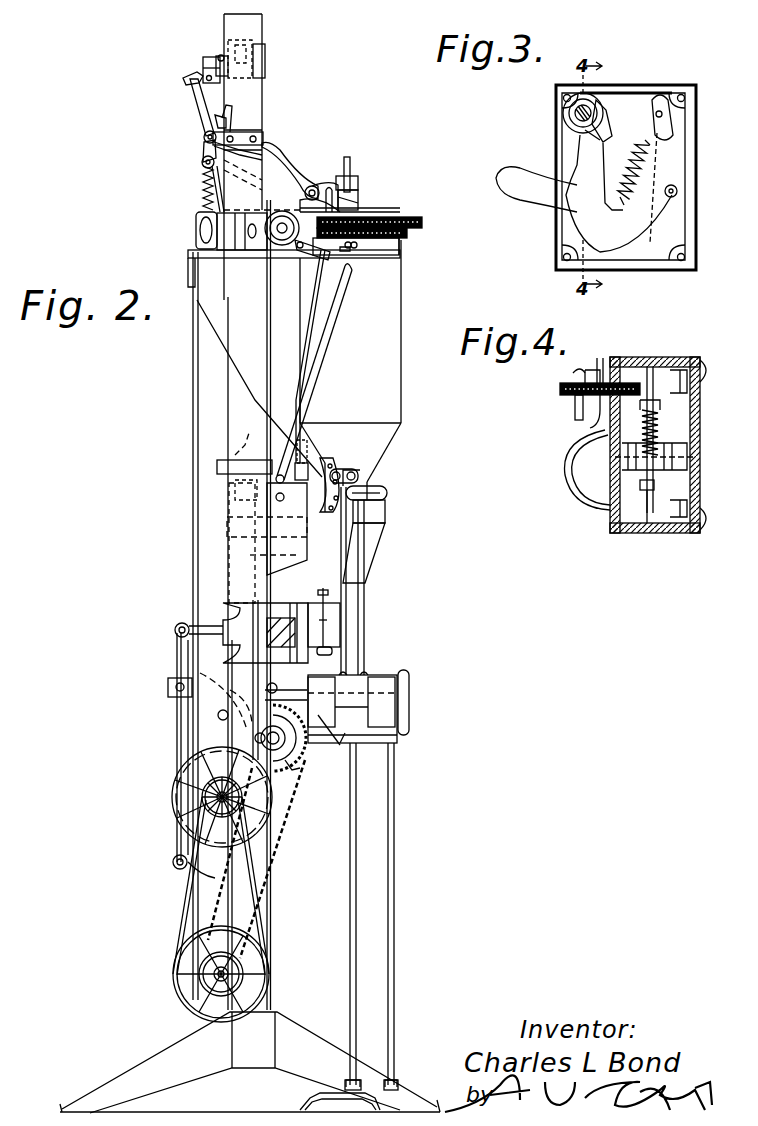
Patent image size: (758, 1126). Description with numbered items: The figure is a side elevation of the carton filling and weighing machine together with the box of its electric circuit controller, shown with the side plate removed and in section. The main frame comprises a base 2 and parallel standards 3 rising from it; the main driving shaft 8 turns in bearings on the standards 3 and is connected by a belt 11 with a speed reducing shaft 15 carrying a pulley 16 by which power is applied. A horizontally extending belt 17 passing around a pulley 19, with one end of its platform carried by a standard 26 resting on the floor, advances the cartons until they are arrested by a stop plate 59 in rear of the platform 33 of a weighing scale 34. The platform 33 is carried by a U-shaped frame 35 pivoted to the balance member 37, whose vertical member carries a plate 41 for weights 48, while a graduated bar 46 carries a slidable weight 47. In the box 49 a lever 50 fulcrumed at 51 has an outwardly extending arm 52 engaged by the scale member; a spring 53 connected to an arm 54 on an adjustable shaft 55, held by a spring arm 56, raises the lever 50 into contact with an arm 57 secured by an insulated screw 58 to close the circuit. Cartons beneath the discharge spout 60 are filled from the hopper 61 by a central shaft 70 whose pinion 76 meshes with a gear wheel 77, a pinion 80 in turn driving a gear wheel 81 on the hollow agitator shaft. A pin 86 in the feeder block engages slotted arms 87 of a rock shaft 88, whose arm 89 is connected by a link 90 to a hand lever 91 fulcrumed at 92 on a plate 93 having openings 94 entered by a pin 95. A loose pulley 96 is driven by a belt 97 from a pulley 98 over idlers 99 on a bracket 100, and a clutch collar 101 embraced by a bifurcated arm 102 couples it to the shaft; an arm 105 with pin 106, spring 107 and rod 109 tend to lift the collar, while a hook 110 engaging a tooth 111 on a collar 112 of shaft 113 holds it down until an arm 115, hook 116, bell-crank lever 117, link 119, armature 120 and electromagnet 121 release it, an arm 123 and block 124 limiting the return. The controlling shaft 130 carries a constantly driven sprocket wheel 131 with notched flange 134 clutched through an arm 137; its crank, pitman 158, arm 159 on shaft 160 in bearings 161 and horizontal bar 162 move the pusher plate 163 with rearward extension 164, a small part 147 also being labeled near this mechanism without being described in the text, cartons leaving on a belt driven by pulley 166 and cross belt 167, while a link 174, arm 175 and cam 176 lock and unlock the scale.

In FIG. 2, the base 2 is at (160, 1068).
In FIG. 2, the standards 3 is at (270, 893).
In FIG. 2, the main driving shaft 8 is at (270, 975).
In FIG. 2, the belt 11 is at (180, 918).
In FIG. 2, the speed reducing shaft 15 is at (207, 806).
In FIG. 2, the pulley 16 is at (174, 795).
In FIG. 2, the horizontally extending belt 17 is at (345, 733).
In FIG. 2, the pulley 19 is at (340, 720).
In FIG. 2, the standard 26 is at (395, 893).
In FIG. 2, the platform 33 is at (364, 675).
In FIG. 2, the weighing scale 34 is at (227, 527).
In FIG. 2, the U-shaped frame 35 is at (375, 560).
In FIG. 2, the balance member 37 is at (240, 485).
In FIG. 2, the platform or plate 41 is at (217, 466).
In FIG. 2, the side plate or bar 46 is at (352, 470).
In FIG. 2, the slidable weight 47 is at (302, 462).
In FIG. 2, the weights 48 is at (235, 455).
In FIG. 3, the box 49 is at (558, 121).
In FIG. 4, the box 49 is at (612, 530).
In FIG. 3, the lever 50 is at (632, 252).
In FIG. 4, the lever 50 is at (650, 533).
In FIG. 3, the fulcrum 51 is at (670, 200).
In FIG. 3, the outwardly extending arm 52 is at (528, 190).
In FIG. 3, the spring 53 is at (625, 165).
In FIG. 4, the spring 53 is at (620, 430).
In FIG. 3, the arm 54 is at (652, 105).
In FIG. 4, the arm 54 is at (657, 368).
In FIG. 3, the shaft 55 is at (661, 95).
In FIG. 4, the spring arm 56 is at (568, 478).
In FIG. 3, the arm 57 is at (600, 132).
In FIG. 4, the arm 57 is at (596, 425).
In FIG. 3, the screw 58 is at (570, 112).
In FIG. 4, the screw 58 is at (565, 398).
In FIG. 2, the stop plate 59 is at (330, 600).
In FIG. 2, the discharge spout 60 is at (375, 545).
In FIG. 2, the hopper 61 is at (385, 378).
In FIG. 2, the central shaft 70 is at (352, 160).
In FIG. 2, the pinion 76 is at (350, 252).
In FIG. 2, the gear wheel 77 is at (423, 223).
In FIG. 2, the pinion 80 is at (408, 233).
In FIG. 2, the gear wheel 81 is at (360, 257).
In FIG. 2, the pin 86 is at (365, 245).
In FIG. 2, the arms 87 is at (400, 250).
In FIG. 2, the rock shaft 88 is at (306, 252).
In FIG. 2, the arm 89 is at (316, 275).
In FIG. 2, the link or bar 90 is at (318, 362).
In FIG. 2, the hand lever 91 is at (378, 486).
In FIG. 2, the fulcrum 92 is at (265, 495).
In FIG. 2, the plate 93 is at (330, 468).
In FIG. 2, the openings 94 is at (387, 515).
In FIG. 2, the pin 95 is at (387, 492).
In FIG. 2, the pulley 96 is at (385, 212).
In FIG. 2, the belt 97 is at (192, 361).
In FIG. 2, the pulley 98 is at (195, 975).
In FIG. 2, the idlers 99 is at (196, 228).
In FIG. 2, the bracket 100 is at (235, 250).
In FIG. 2, the clutch collar 101 is at (360, 198).
In FIG. 2, the bifurcated arm 102 is at (345, 182).
In FIG. 2, the arm 105 is at (315, 178).
In FIG. 2, the pin 106 is at (202, 163).
In FIG. 2, the spring 107 is at (203, 185).
In FIG. 2, the rod 109 is at (208, 205).
In FIG. 2, the hook 110 is at (203, 145).
In FIG. 2, the tooth 111 is at (205, 143).
In FIG. 2, the collar 112 is at (205, 135).
In FIG. 2, the shaft 113 is at (262, 148).
In FIG. 2, the arm 115 is at (192, 100).
In FIG. 2, the hook 116 is at (186, 76).
In FIG. 2, the bell-crank lever 117 is at (203, 64).
In FIG. 2, the link 119 is at (218, 56).
In FIG. 2, the armature 120 is at (215, 62).
In FIG. 2, the electromagnet 121 is at (262, 58).
In FIG. 2, the arm 123 is at (225, 120).
In FIG. 2, the block 124 is at (225, 122).
In FIG. 2, the controlling shaft 130 is at (245, 740).
In FIG. 2, the sprocket wheel 131 is at (300, 760).
In FIG. 2, the annular flange 134 is at (298, 775).
In FIG. 2, the arm 137 is at (256, 740).
In FIG. 2, the stop 147 is at (335, 650).
In FIG. 2, the pitman 158 is at (168, 688).
In FIG. 2, the arm 159 is at (176, 762).
In FIG. 2, the shaft 160 is at (174, 864).
In FIG. 2, the bearings 161 is at (195, 880).
In FIG. 2, the horizontal bar 162 is at (205, 630).
In FIG. 2, the pusher plate 163 is at (340, 613).
In FIG. 2, the rearward extension 164 is at (375, 720).
In FIG. 2, the pulley 166 is at (385, 678).
In FIG. 2, the cross belt 167 is at (410, 700).
In FIG. 2, the bar or link 174 is at (250, 555).
In FIG. 2, the arm 175 is at (185, 668).
In FIG. 2, the cam 176 is at (288, 810).